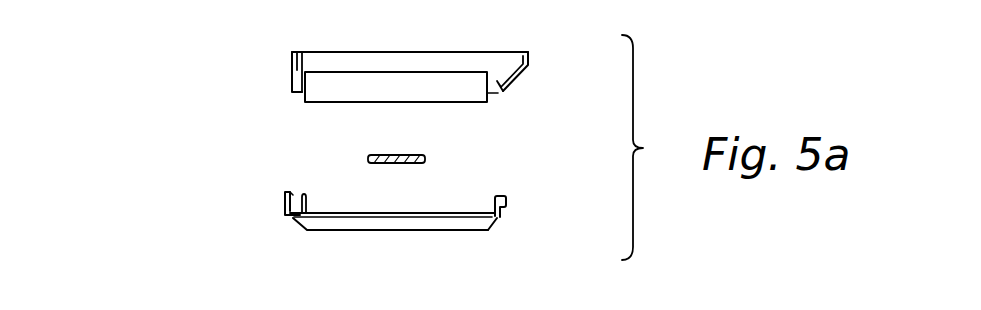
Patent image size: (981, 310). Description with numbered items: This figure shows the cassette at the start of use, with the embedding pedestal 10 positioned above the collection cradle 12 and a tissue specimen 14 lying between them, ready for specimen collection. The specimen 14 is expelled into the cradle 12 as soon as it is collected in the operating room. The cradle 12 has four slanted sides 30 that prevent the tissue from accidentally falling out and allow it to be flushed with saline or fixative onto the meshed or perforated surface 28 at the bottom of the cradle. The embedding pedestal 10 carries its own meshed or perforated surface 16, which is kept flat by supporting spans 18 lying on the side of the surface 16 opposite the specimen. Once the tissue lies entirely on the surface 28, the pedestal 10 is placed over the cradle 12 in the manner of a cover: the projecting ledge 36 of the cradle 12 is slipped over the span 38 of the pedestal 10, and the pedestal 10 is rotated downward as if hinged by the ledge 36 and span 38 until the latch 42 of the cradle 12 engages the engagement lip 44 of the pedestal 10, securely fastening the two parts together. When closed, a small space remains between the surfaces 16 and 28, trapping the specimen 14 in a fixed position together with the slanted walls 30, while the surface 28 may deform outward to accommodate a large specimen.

The embedding pedestal 10 is at (150, 75).
The collection cradle 12 is at (159, 215).
The specimen 14 is at (368, 157).
The meshed or perforated surface 16 is at (450, 105).
The supporting spans 18 is at (187, 306).
The meshed or perforated surface 28 is at (410, 237).
The slanted sides 30 is at (495, 228).
The projecting ledge 36 is at (508, 195).
The span 38 is at (504, 86).
The latch 42 is at (288, 189).
The engagement lip 44 is at (292, 58).